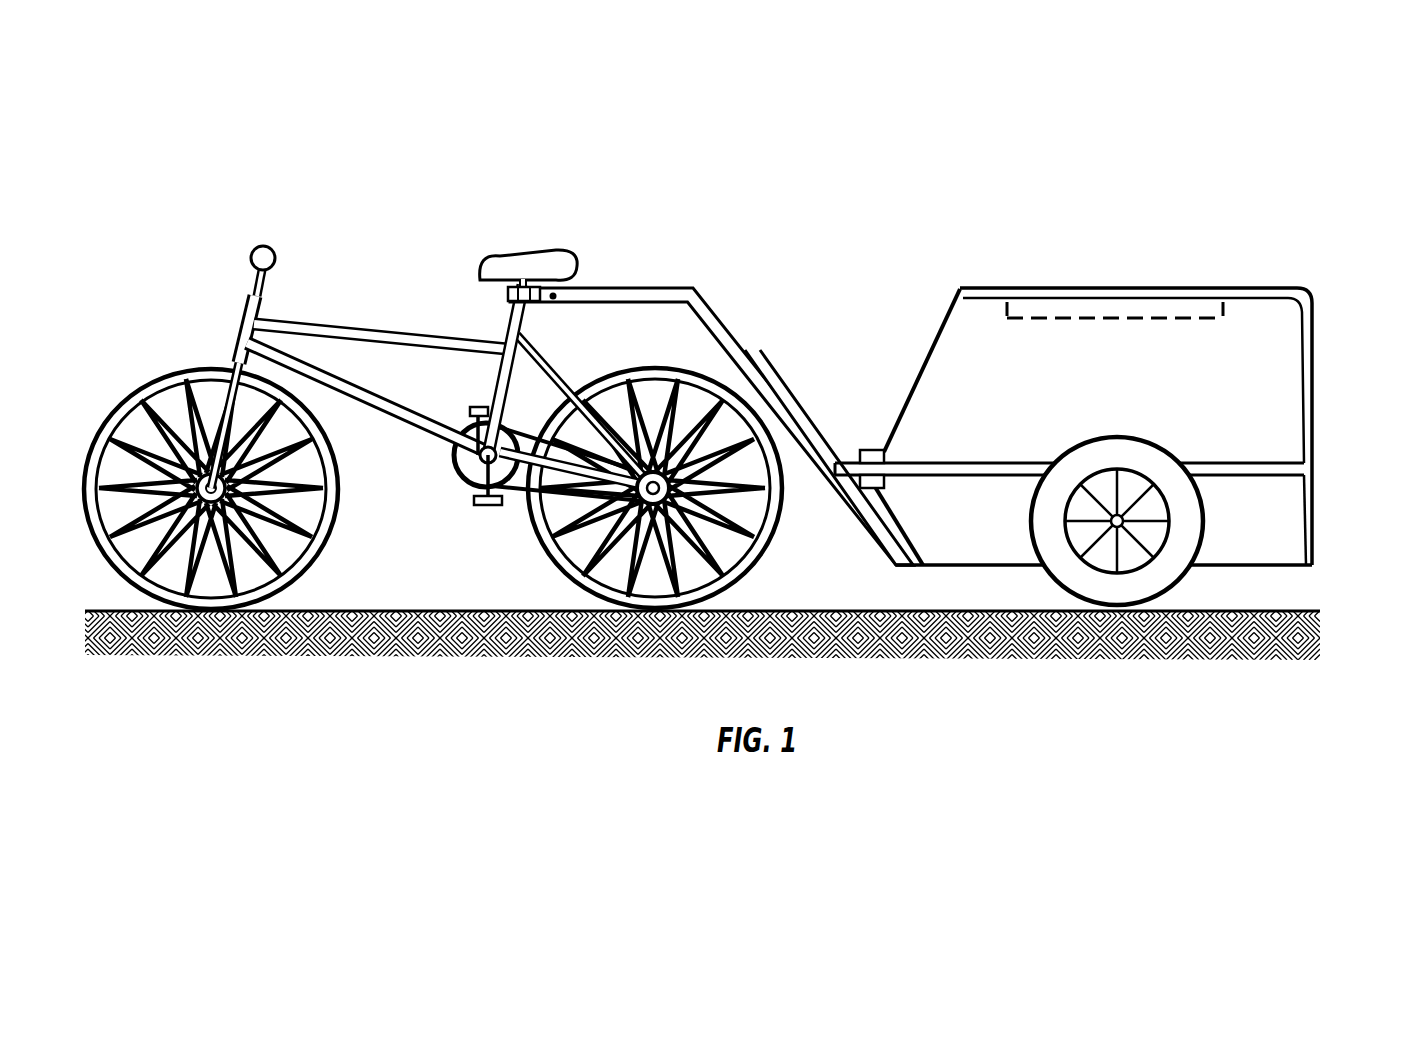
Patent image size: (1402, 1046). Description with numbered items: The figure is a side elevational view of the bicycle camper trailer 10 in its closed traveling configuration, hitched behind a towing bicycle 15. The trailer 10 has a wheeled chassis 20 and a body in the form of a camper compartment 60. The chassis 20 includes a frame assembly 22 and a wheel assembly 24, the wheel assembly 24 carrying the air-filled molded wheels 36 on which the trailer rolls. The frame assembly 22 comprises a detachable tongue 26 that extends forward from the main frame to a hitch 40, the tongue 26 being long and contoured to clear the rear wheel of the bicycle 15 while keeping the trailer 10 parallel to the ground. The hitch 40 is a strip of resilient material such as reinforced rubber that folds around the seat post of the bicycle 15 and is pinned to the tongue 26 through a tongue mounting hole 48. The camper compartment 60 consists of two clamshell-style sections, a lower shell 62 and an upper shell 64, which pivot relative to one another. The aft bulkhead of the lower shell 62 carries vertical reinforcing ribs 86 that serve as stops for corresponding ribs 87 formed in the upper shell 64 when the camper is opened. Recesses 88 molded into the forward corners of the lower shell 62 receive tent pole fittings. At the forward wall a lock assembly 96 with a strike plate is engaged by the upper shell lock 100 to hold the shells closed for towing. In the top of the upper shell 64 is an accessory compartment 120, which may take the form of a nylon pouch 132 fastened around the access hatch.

The bicycle camper trailer 10 is at (918, 412).
The towing bicycle 15 is at (390, 260).
The wheeled chassis 20 is at (856, 540).
The frame assembly 22 is at (675, 429).
The wheel assembly 24 is at (1040, 597).
The detachable tongue 26 is at (724, 325).
The wheels 36 is at (1157, 581).
The hitch 40 is at (507, 293).
The tongue mounting hole 48 is at (556, 300).
The camper compartment 60 is at (1180, 341).
The lower shell 62 is at (1278, 542).
The upper shell 64 is at (1294, 426).
The reinforcing ribs 86 is at (1312, 538).
The ribs 87 is at (1308, 353).
The recesses 88 is at (885, 457).
The lock assembly 96 is at (890, 391).
The upper shell lock 100 is at (878, 440).
The accessory compartment 120 is at (1048, 306).
The pouch 132 is at (1107, 316).